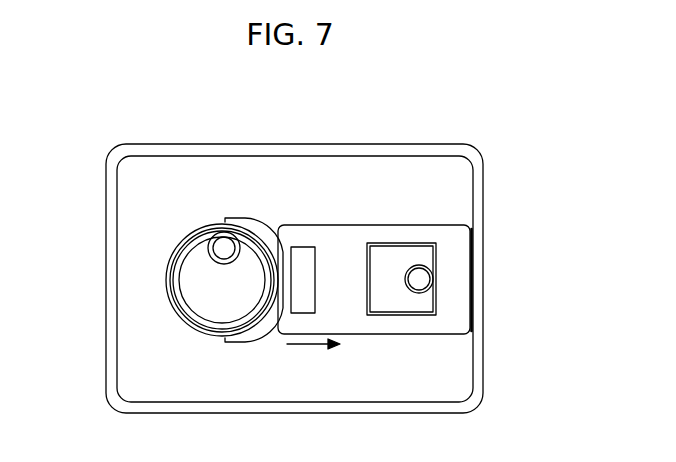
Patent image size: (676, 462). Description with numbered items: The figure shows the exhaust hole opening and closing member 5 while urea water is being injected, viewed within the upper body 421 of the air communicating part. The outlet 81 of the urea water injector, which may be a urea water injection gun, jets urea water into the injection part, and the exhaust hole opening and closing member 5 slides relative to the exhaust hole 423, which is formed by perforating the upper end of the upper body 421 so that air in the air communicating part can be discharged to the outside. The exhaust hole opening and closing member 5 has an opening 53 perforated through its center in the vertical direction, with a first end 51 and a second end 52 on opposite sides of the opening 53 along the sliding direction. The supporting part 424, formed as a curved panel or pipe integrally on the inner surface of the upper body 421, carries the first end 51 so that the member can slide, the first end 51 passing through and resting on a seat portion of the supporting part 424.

The exhaust hole opening and closing member 5 is at (373, 214).
The first end 51 is at (262, 295).
The second end 52 is at (472, 279).
The opening 53 is at (389, 293).
The outlet 81 is at (182, 258).
The upper body 421 is at (483, 191).
The exhaust hole 423 is at (419, 283).
The supporting part 424 is at (243, 218).